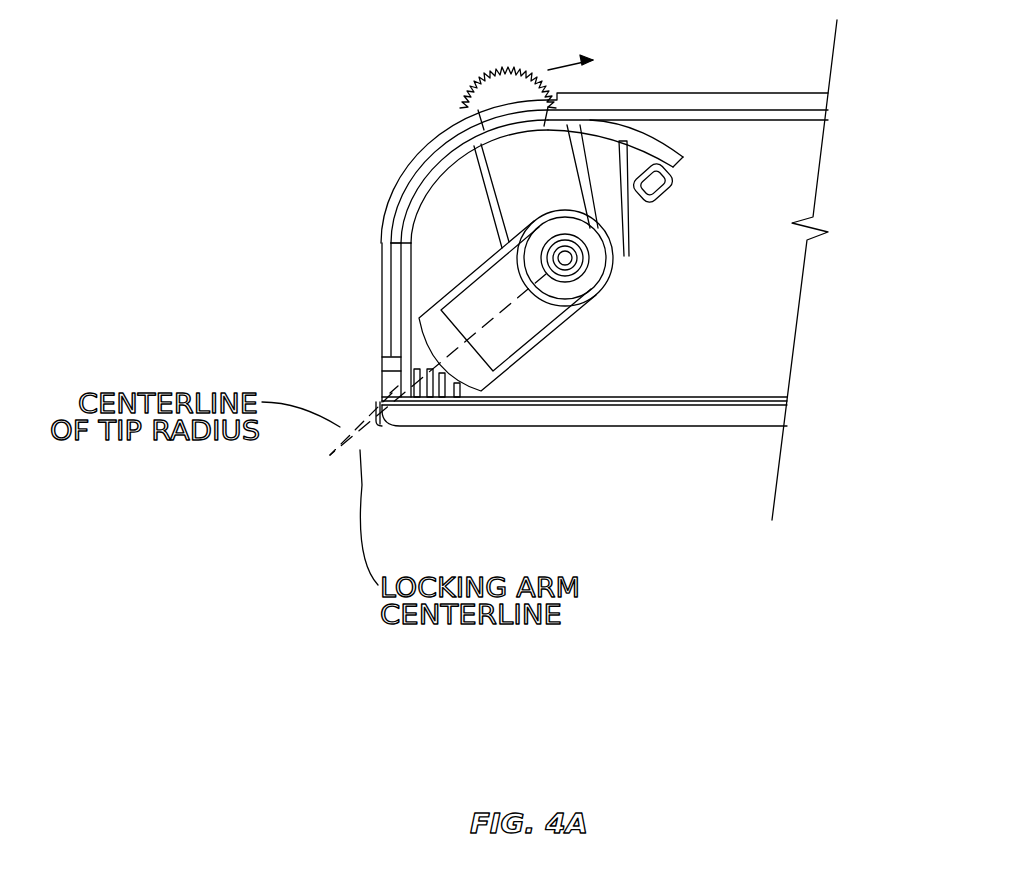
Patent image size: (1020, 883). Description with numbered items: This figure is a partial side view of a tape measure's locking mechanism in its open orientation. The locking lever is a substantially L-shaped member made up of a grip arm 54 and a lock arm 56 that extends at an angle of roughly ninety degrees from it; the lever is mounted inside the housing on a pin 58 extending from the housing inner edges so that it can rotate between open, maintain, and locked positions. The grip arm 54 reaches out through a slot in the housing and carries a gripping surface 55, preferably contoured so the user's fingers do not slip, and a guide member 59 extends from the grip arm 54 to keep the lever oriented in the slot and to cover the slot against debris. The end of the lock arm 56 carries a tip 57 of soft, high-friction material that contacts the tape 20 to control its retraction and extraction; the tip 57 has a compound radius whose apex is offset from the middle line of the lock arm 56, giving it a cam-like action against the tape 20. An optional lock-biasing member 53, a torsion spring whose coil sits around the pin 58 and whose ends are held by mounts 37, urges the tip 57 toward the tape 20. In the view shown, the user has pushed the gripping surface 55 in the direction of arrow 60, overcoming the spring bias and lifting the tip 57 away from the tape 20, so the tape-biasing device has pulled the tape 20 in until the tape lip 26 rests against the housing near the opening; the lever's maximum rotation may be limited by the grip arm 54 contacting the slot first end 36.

The tape 20 is at (548, 405).
The tape lip 26 is at (382, 400).
The slot first end 36 is at (582, 93).
The mounts 37 is at (648, 162).
The lock-biasing member 53 is at (623, 140).
The grip arm 54 is at (520, 190).
The gripping surface 55 is at (467, 122).
The lock arm 56 is at (537, 317).
The tip 57 is at (468, 370).
The pin 58 is at (583, 257).
The guide member 59 is at (420, 215).
The arrow 60 is at (565, 62).